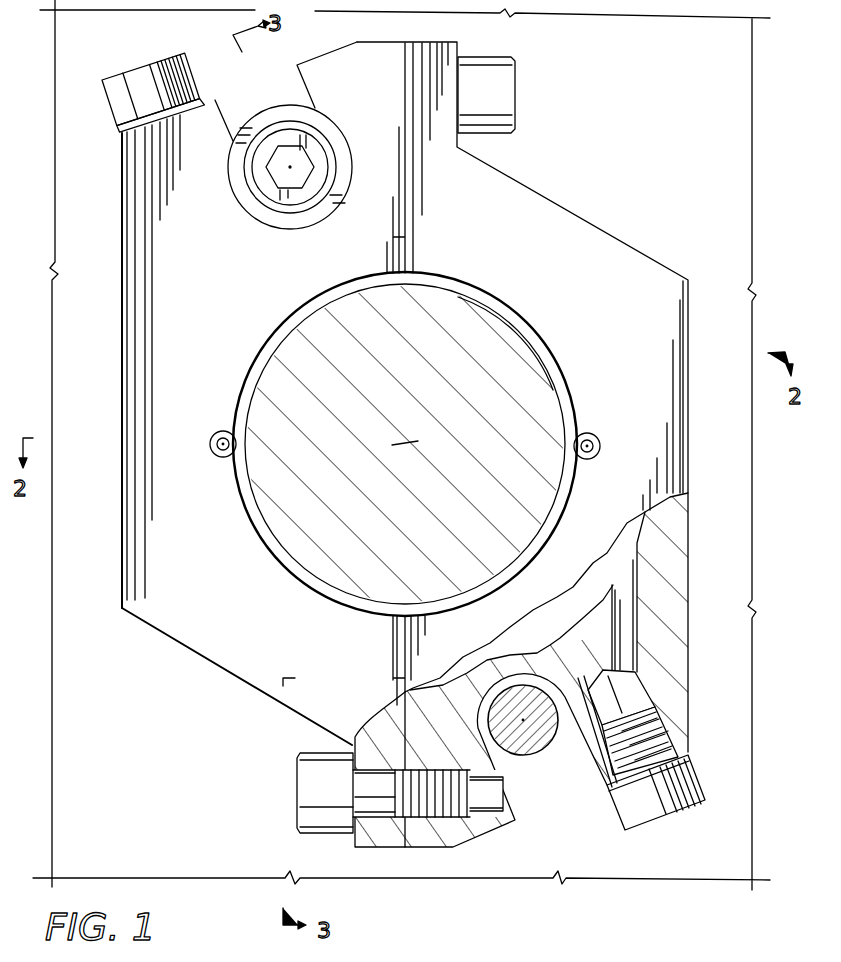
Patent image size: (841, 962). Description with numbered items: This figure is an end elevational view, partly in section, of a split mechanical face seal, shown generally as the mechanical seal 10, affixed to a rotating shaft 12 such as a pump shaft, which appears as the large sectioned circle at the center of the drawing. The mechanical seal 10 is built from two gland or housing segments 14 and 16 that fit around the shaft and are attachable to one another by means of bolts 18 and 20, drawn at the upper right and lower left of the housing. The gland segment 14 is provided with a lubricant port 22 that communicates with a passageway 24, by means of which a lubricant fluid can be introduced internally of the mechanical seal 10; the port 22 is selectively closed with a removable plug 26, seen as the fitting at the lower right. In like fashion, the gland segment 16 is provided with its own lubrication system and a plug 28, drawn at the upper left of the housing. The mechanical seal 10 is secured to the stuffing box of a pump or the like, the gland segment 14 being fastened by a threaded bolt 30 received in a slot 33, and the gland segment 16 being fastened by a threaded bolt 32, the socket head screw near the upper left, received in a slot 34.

The mechanical seal 10 is at (619, 126).
The rotating shaft 12 is at (508, 372).
The gland segment 14 is at (593, 240).
The gland segment 16 is at (213, 640).
The bolt 18 is at (503, 88).
The bolt 20 is at (313, 797).
The lubricant port 22 is at (627, 695).
The passageway 24 is at (627, 613).
The removable plug 26 is at (697, 773).
The plug 28 is at (113, 107).
The threaded bolt 30 is at (533, 743).
The threaded bolt 32 is at (262, 193).
The slot 33 is at (597, 770).
The slot 34 is at (293, 80).